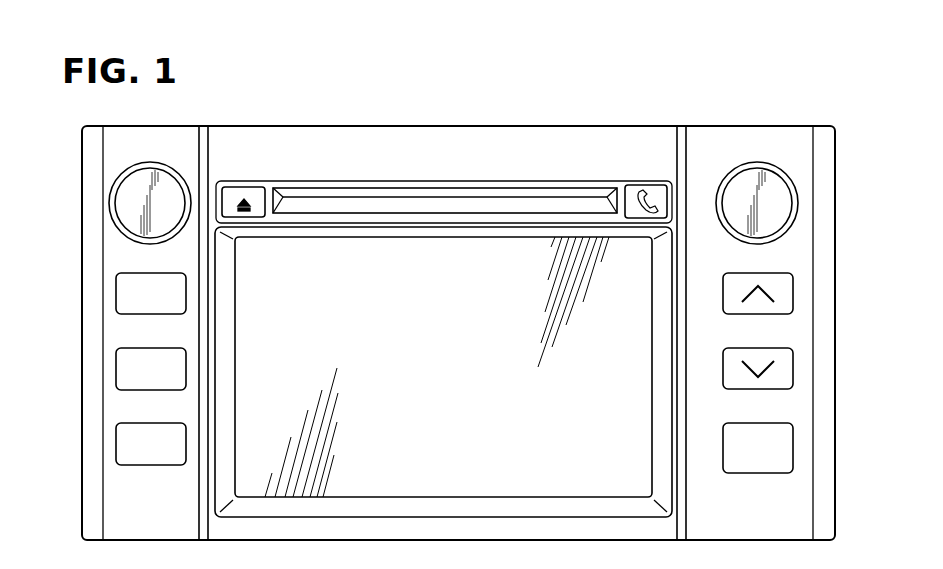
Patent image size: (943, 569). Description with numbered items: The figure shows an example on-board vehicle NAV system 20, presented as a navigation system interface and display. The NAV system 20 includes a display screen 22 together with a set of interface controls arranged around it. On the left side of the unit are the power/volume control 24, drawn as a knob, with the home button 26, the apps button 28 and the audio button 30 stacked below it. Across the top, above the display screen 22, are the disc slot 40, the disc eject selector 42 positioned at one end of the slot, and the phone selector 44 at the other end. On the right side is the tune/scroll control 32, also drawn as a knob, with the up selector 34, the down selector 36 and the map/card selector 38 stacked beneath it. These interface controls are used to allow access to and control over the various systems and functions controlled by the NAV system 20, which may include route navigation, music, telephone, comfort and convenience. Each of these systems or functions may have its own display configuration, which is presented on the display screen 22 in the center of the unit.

The on-board vehicle NAV system 20 is at (707, 97).
The display screen 22 is at (449, 366).
The power/volume control 24 is at (132, 203).
The home button 26 is at (116, 294).
The apps button 28 is at (116, 370).
The audio button 30 is at (116, 446).
The tune/scroll control 32 is at (777, 204).
The up selector 34 is at (793, 294).
The down selector 36 is at (793, 369).
The map/card selector 38 is at (793, 447).
The disc slot 40 is at (398, 197).
The disc eject selector 42 is at (260, 186).
The phone selector 44 is at (652, 186).